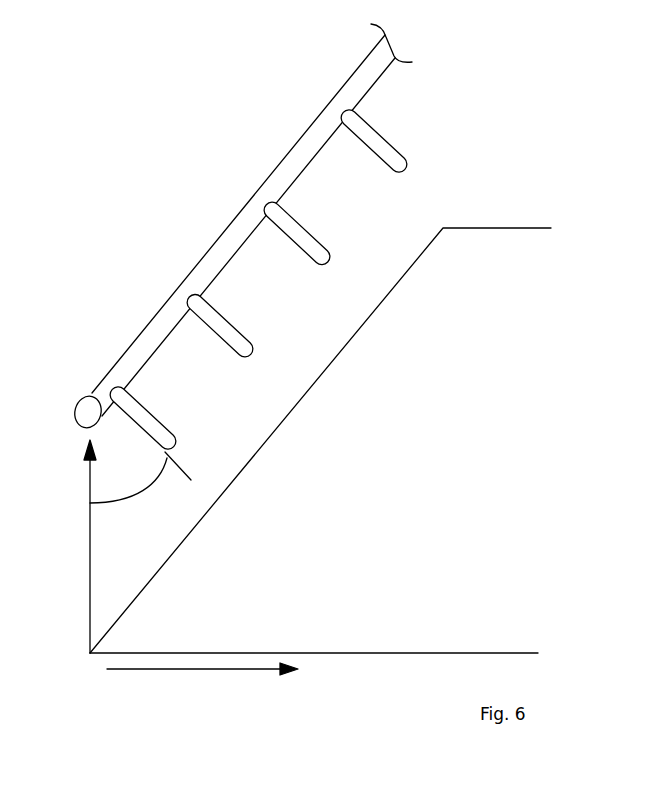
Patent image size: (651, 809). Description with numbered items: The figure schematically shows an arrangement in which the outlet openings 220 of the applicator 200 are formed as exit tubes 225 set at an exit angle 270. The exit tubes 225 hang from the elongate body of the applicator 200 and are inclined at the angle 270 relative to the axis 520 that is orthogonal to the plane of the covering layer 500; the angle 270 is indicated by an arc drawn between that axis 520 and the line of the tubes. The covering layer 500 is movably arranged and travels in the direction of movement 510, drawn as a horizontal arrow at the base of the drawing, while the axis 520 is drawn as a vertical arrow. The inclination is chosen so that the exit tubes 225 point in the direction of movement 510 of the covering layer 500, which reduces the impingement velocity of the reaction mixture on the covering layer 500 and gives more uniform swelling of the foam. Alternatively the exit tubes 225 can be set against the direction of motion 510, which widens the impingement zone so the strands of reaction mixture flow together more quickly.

The drug delivery device 200 is at (249, 252).
The outlet openings 220 is at (178, 288).
The exit tubes 225 is at (186, 433).
The exit angle 270 is at (110, 503).
The covering layer 500 is at (407, 653).
The direction of movement 510 is at (208, 670).
The axis orthogonal to the plane of the covering layer 520 is at (88, 553).